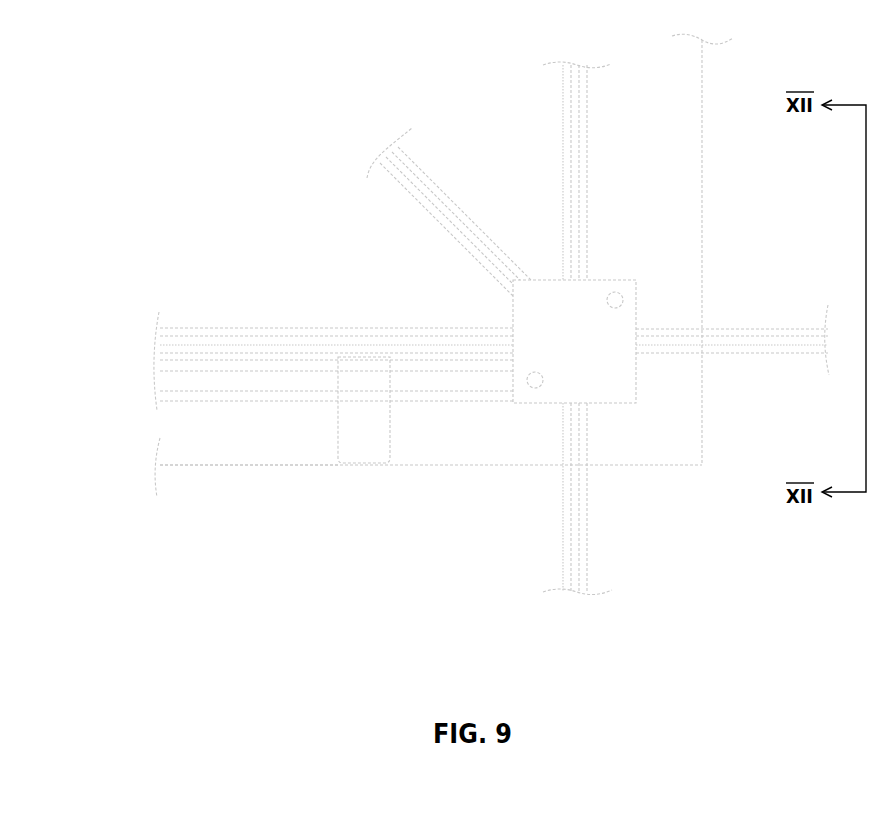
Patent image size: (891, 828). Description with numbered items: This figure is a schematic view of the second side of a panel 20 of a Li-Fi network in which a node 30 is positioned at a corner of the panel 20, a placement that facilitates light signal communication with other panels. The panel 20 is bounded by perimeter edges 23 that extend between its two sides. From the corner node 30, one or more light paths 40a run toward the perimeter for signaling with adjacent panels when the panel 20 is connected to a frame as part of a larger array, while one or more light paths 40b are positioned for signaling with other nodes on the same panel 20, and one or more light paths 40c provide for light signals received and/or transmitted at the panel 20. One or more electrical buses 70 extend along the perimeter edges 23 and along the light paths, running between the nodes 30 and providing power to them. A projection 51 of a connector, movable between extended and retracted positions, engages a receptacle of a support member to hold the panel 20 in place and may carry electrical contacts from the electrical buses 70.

The panel 20 is at (443, 277).
The perimeter edge 23 is at (246, 509).
The node 30 is at (595, 398).
The light path 40a is at (662, 450).
The light path 40b is at (402, 231).
The light path 40c is at (449, 204).
The projection 51 is at (360, 435).
The electrical bus 70 is at (437, 437).